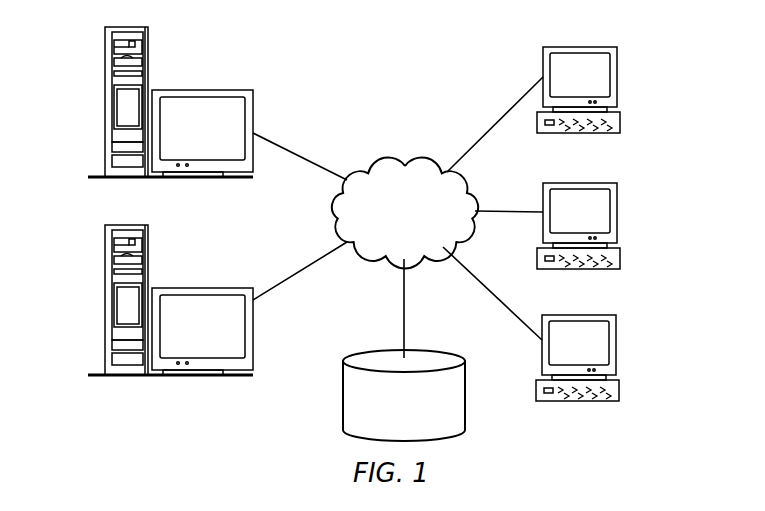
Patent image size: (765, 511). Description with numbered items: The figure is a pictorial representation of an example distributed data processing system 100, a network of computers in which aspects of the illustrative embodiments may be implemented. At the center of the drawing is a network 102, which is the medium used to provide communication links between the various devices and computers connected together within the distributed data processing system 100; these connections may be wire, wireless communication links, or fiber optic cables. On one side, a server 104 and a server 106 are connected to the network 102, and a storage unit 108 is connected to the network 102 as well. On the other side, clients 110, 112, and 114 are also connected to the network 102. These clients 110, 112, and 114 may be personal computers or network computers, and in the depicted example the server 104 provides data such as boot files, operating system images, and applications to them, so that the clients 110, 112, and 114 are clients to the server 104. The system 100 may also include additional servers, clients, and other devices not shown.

The distributed data processing system 100 is at (455, 58).
The network 102 is at (397, 163).
The server 104 is at (107, 105).
The server 106 is at (107, 305).
The storage unit 108 is at (343, 398).
The client 110 is at (617, 72).
The client 112 is at (615, 207).
The client 114 is at (613, 343).